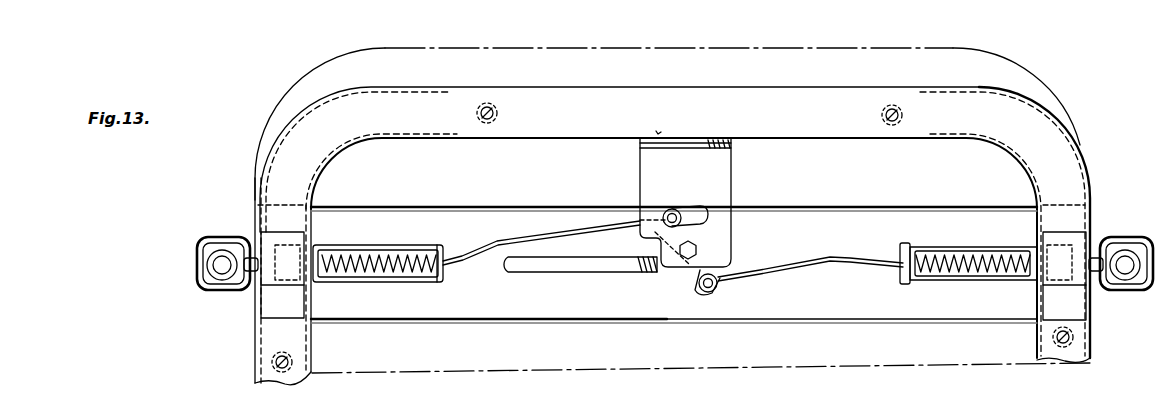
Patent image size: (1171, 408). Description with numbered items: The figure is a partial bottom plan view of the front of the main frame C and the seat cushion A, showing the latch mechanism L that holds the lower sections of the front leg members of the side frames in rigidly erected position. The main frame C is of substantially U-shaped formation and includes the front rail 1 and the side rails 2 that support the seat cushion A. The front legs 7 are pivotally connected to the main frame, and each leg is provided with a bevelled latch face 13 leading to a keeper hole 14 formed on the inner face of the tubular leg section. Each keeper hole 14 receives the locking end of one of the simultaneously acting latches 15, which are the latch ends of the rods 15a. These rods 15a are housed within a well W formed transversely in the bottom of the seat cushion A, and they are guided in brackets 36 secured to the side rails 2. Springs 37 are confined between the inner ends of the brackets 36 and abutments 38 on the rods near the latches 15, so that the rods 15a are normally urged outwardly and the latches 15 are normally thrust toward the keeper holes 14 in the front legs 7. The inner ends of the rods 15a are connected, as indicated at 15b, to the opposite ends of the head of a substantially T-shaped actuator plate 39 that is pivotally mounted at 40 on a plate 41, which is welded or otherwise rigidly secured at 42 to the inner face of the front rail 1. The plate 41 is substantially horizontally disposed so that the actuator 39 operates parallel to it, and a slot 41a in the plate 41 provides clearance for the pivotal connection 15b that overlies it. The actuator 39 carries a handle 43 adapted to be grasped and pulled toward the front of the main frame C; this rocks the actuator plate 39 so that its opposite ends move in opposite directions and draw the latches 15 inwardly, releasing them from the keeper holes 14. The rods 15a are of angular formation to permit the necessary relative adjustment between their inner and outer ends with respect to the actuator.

The front rail 1 is at (658, 134).
The side rails 2 is at (296, 376).
The front legs 7 is at (197, 263).
The bevelled latch face 13 is at (246, 287).
The keeper hole 14 is at (235, 244).
The latches 15 is at (253, 274).
The rods 15a is at (466, 264).
The pivotal connection 15b is at (672, 208).
The brackets 36 is at (440, 286).
The springs 37 is at (381, 254).
The abutments 38 is at (672, 262).
The actuator plate 39 is at (707, 294).
The pivot 40 is at (698, 252).
The plate 41 is at (722, 183).
The slot 41a is at (694, 210).
The weld 42 is at (712, 141).
The handle 43 is at (570, 276).
The seat cushion A is at (927, 62).
The main frame C is at (1058, 155).
The well W is at (884, 222).
The latch mechanism L is at (667, 320).